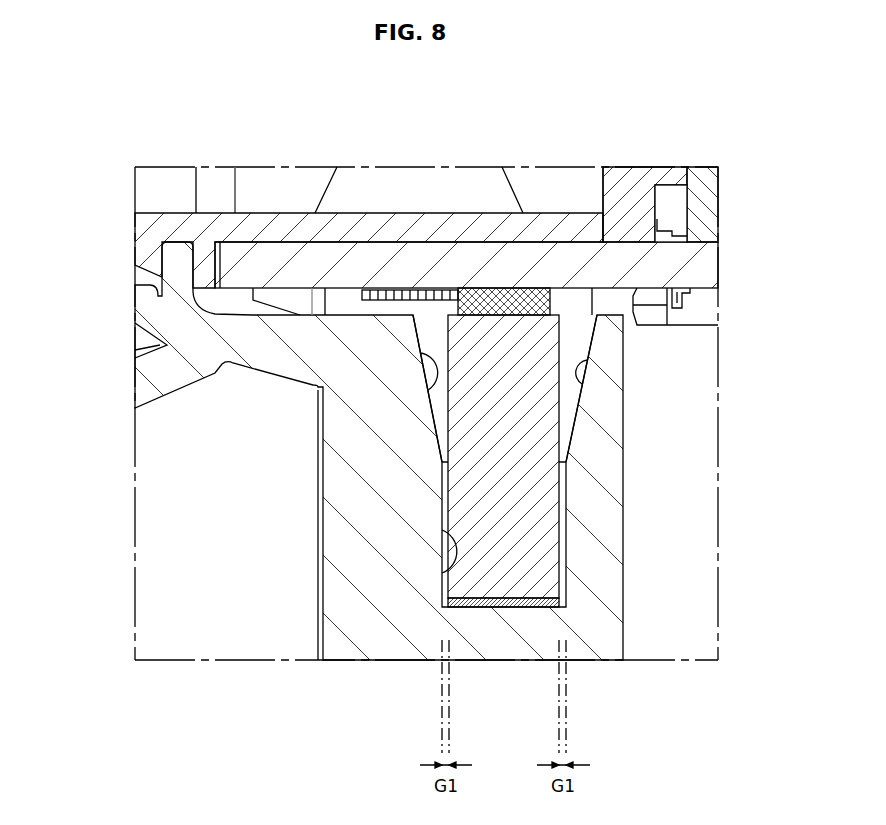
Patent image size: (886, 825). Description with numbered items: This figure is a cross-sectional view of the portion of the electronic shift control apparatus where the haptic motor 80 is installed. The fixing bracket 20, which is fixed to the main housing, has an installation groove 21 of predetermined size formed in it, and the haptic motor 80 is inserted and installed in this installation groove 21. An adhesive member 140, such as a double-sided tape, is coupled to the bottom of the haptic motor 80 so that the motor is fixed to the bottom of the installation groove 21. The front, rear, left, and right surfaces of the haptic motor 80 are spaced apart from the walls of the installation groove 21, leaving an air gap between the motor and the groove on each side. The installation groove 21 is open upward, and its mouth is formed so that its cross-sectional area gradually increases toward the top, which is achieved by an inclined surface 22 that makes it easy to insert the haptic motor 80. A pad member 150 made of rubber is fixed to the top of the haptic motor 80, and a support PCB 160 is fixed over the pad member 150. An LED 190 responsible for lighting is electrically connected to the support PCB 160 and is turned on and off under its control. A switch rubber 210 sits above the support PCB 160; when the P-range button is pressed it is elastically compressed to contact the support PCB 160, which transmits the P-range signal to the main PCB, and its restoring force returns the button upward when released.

The fixing bracket 20 is at (372, 640).
The installation groove 21 is at (442, 577).
The inclined surface 22 is at (587, 360).
The haptic motor 80 is at (517, 508).
The adhesive member 140 is at (510, 607).
The pad member 150 is at (488, 300).
The support PCB 160 is at (383, 228).
The LED 190 is at (706, 218).
The switch rubber 210 is at (550, 232).